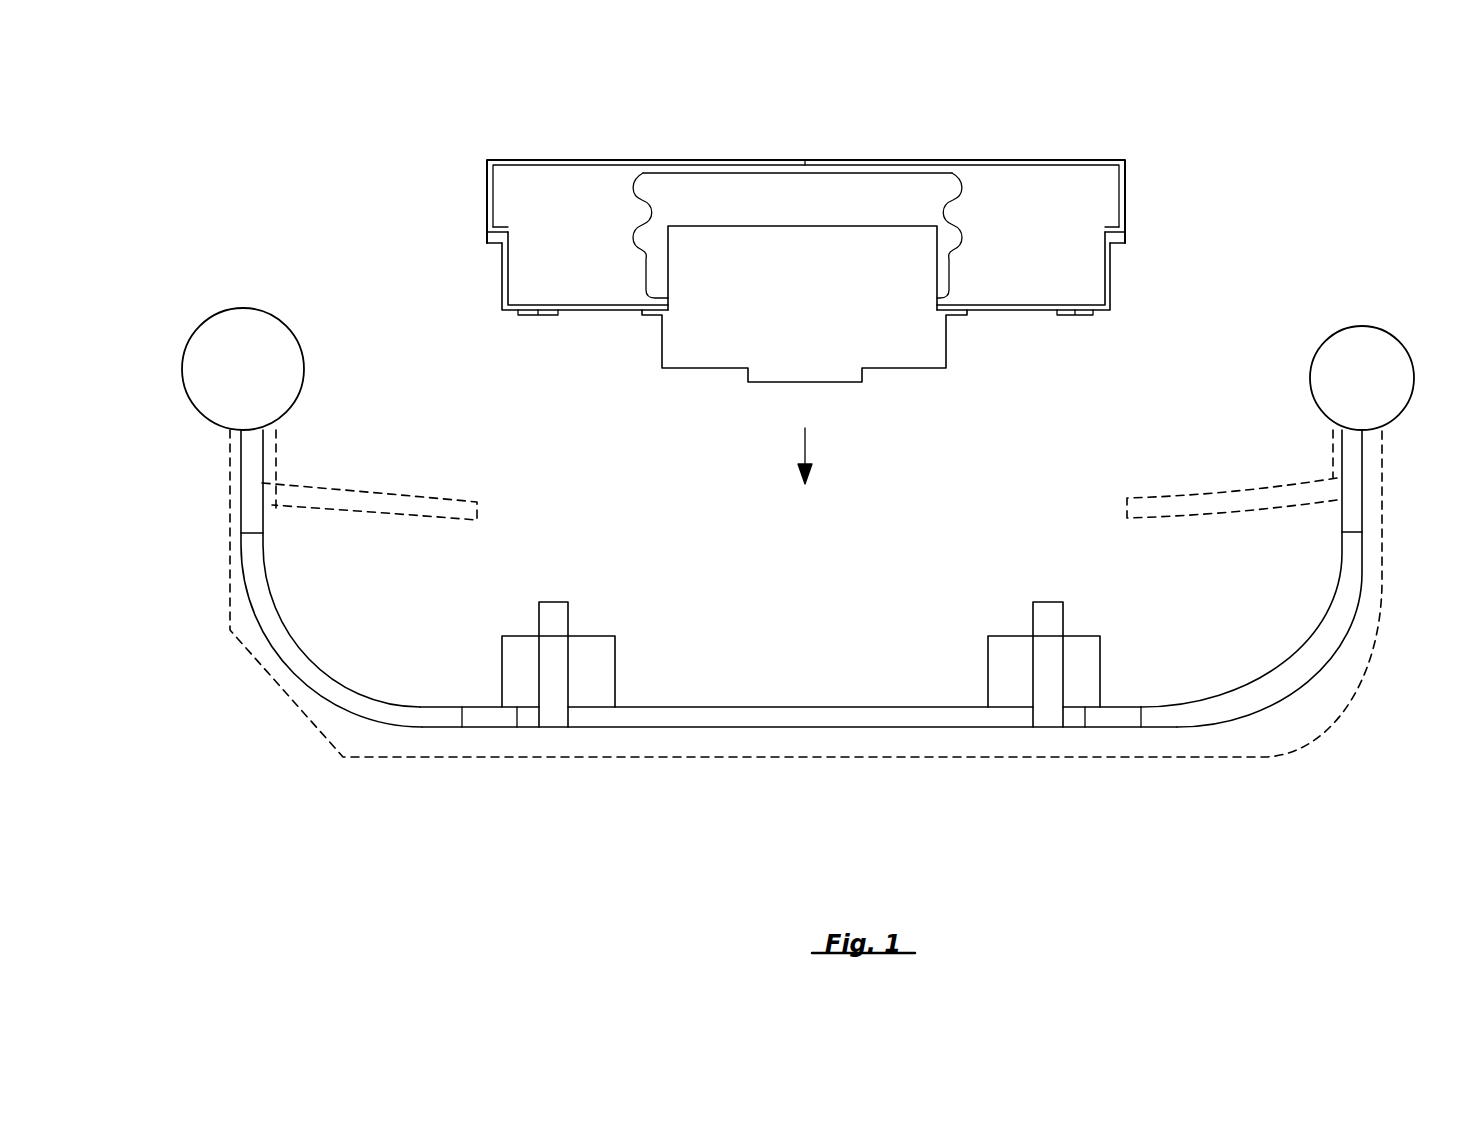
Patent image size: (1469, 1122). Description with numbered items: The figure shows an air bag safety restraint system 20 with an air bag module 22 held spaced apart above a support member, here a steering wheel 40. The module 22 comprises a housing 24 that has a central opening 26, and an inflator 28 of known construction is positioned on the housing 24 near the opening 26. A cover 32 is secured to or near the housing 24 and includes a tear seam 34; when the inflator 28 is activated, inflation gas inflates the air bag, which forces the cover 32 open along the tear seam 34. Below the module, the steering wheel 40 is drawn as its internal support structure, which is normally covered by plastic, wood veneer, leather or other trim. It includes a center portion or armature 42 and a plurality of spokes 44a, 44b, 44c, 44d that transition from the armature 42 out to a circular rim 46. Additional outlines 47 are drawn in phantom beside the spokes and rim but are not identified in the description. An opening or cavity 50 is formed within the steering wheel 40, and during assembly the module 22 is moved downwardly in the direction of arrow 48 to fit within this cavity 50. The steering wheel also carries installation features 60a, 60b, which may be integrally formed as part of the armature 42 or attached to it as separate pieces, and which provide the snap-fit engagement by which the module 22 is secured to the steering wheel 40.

The switch assembly 20 is at (433, 77).
The air bag module 22 is at (1150, 210).
The housing 24 is at (1130, 297).
The central opening 26 is at (942, 313).
The inflator 28 is at (903, 327).
The cover 32 is at (1044, 158).
The tear seam 34 is at (805, 160).
The steering wheel 40 is at (1282, 771).
The armature 42 is at (698, 702).
The spoke 44a is at (557, 622).
The spoke 44b is at (295, 665).
The spoke 44c is at (1047, 625).
The spoke 44d is at (1297, 668).
The circular rim 46 is at (1362, 377).
The phantom position of arms 47 is at (360, 508).
The arrow 48 is at (790, 451).
The cavity 50 is at (1120, 510).
The installation feature 60a is at (515, 687).
The installation feature 60b is at (975, 672).